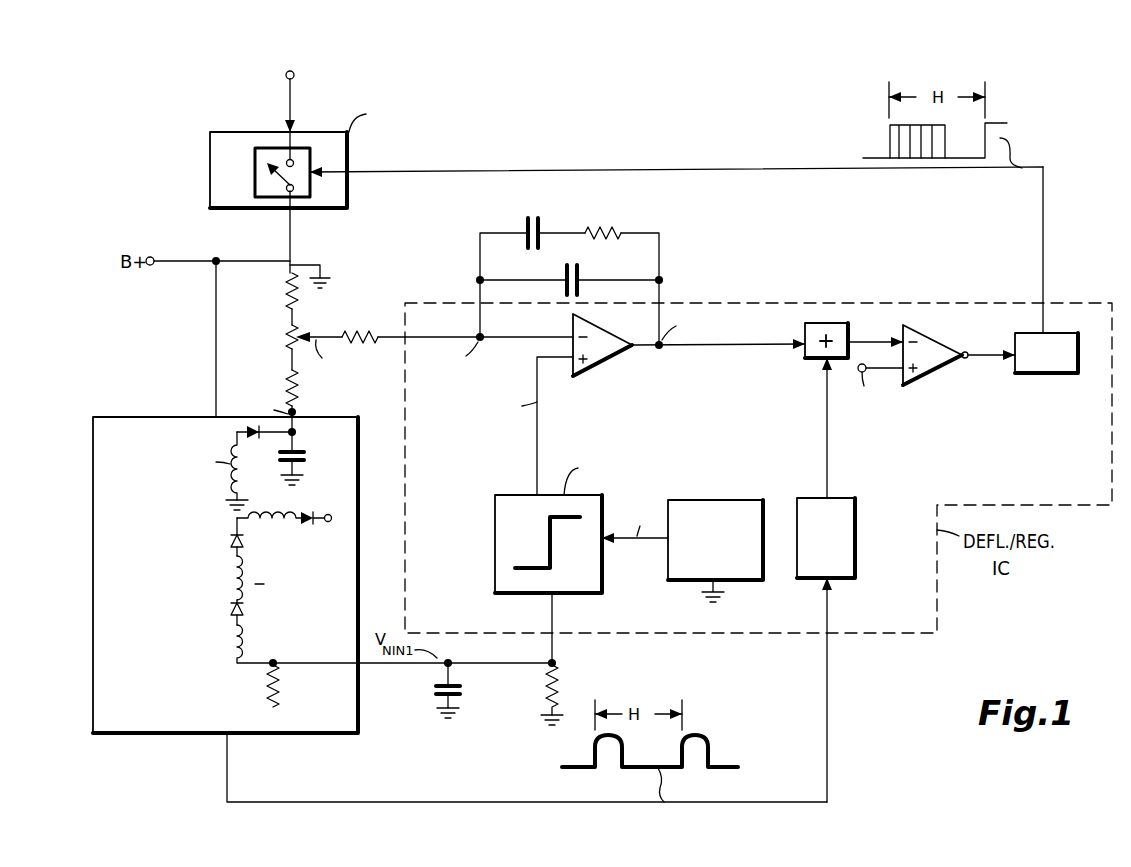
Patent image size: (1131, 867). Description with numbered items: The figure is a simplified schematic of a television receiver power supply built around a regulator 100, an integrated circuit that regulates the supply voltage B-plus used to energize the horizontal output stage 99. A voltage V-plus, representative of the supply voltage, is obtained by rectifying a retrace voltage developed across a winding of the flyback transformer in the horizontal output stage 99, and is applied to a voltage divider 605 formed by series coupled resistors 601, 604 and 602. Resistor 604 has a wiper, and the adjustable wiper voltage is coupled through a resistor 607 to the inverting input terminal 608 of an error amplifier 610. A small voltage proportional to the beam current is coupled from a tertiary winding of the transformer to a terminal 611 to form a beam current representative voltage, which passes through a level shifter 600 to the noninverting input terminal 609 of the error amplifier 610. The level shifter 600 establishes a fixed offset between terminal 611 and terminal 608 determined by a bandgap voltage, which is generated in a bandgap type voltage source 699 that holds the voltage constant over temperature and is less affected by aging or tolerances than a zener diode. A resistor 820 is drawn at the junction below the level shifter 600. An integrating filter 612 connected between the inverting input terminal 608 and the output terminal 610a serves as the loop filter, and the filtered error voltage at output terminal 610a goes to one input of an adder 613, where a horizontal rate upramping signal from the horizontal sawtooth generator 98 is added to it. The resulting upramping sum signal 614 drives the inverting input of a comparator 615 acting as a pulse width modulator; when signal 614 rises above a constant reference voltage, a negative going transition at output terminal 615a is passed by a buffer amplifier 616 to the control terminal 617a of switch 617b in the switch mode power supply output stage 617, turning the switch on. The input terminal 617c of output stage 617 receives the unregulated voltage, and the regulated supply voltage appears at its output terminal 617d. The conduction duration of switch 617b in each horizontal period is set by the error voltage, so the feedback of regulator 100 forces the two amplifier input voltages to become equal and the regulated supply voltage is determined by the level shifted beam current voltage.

The horizontal sawtooth generator 98 is at (855, 528).
The horizontal output stage 99 is at (98, 417).
The regulator 100 is at (413, 752).
The level shifter 600 is at (508, 495).
The resistor 601 is at (286, 290).
The resistor 602 is at (288, 391).
The resistor 604 is at (284, 345).
The voltage divider 605 is at (289, 352).
The resistor 607 is at (356, 330).
The inverting input terminal 608 is at (477, 334).
The noninverting input terminal 609 is at (553, 356).
The error amplifier 610 is at (602, 361).
The output terminal 610a is at (664, 350).
The terminal 611 is at (456, 668).
The integrating filter 612 is at (672, 212).
The adder 613 is at (805, 354).
The sum signal 614 is at (864, 342).
The comparator 615 is at (935, 340).
The output terminal 615a is at (963, 359).
The buffer amplifier 616 is at (1068, 374).
The switch mode power supply output stage 617 is at (254, 132).
The control terminal 617a is at (357, 174).
The switch 617b is at (255, 167).
The input terminal 617c is at (300, 132).
The output terminal 617d is at (296, 216).
The bandgap type voltage source 699 is at (716, 500).
The resistor 820 is at (562, 675).